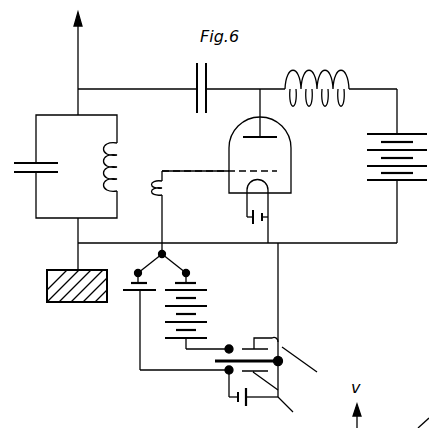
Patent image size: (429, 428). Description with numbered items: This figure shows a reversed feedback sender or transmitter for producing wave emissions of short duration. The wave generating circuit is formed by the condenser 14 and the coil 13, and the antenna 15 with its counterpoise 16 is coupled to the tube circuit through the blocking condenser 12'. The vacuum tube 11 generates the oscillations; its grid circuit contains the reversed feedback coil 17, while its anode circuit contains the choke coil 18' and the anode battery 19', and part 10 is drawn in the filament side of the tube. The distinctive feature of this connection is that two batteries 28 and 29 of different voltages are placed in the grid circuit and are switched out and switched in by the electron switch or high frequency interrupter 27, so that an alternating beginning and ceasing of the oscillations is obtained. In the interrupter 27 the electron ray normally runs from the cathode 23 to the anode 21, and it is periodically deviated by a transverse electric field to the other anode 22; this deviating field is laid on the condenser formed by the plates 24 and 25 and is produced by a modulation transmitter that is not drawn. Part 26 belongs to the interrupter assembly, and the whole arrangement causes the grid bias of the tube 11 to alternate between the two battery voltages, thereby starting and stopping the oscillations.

The antenna 15 is at (62, 50).
The blocking condenser 12' is at (185, 86).
The choke coil 18' is at (320, 77).
The anode battery 19' is at (383, 164).
The vacuum tube 11 is at (226, 141).
The part of the transmitter 10 is at (248, 213).
The coil of the wave generating circuit 13 is at (131, 167).
The condenser 14 is at (65, 166).
The reversed feedback coil of the grid circuit 17 is at (173, 207).
The counterpoise 16 is at (77, 300).
The battery 29 is at (170, 323).
The battery 28 is at (198, 312).
The anode 21 is at (228, 345).
The condenser plate 25 is at (227, 373).
The high frequency interrupter 27 is at (215, 362).
The condenser plate 24 is at (247, 347).
The cathode 23 is at (285, 367).
The anode 22 is at (226, 371).
The part of the high frequency interrupter 26 is at (242, 408).